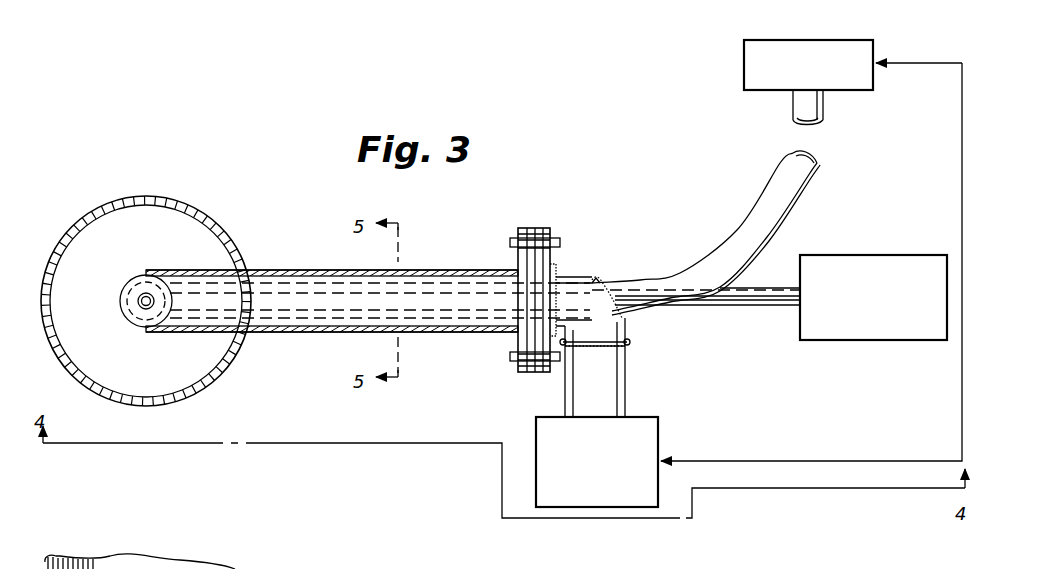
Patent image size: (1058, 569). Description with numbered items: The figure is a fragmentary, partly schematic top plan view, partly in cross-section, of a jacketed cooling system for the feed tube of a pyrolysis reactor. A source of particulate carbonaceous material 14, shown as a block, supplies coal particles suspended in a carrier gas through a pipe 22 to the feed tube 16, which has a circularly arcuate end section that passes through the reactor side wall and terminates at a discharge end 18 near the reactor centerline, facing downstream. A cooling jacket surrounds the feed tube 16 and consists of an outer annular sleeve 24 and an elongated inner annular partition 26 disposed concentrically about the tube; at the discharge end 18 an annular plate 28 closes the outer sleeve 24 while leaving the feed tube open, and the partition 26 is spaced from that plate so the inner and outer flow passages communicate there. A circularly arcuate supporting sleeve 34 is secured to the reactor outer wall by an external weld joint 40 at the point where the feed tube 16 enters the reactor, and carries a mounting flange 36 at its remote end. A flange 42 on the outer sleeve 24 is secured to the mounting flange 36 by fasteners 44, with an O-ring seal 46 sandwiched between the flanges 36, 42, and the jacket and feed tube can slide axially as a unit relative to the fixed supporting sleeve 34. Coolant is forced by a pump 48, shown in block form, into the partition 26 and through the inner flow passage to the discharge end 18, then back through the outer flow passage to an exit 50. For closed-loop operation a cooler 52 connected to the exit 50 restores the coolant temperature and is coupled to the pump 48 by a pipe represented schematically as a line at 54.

The source of particulate carbonaceous material 14 is at (835, 340).
The feed tube 16 is at (290, 295).
The discharge end 18 is at (152, 298).
The pipe 22 is at (733, 305).
The outer annular sleeve 24 is at (266, 271).
The inner annular partition 26 is at (465, 332).
The annular plate 28 is at (140, 276).
The supporting sleeve 34 is at (360, 332).
The mounting flange 36 is at (518, 262).
The external weld joint 40 is at (242, 268).
The flange 42 is at (553, 276).
The fasteners 44 is at (511, 238).
The O-ring seal 46 is at (532, 229).
The pump 48 is at (845, 90).
The exit 50 is at (598, 344).
The cooler 52 is at (598, 507).
The pipe 54 is at (810, 438).